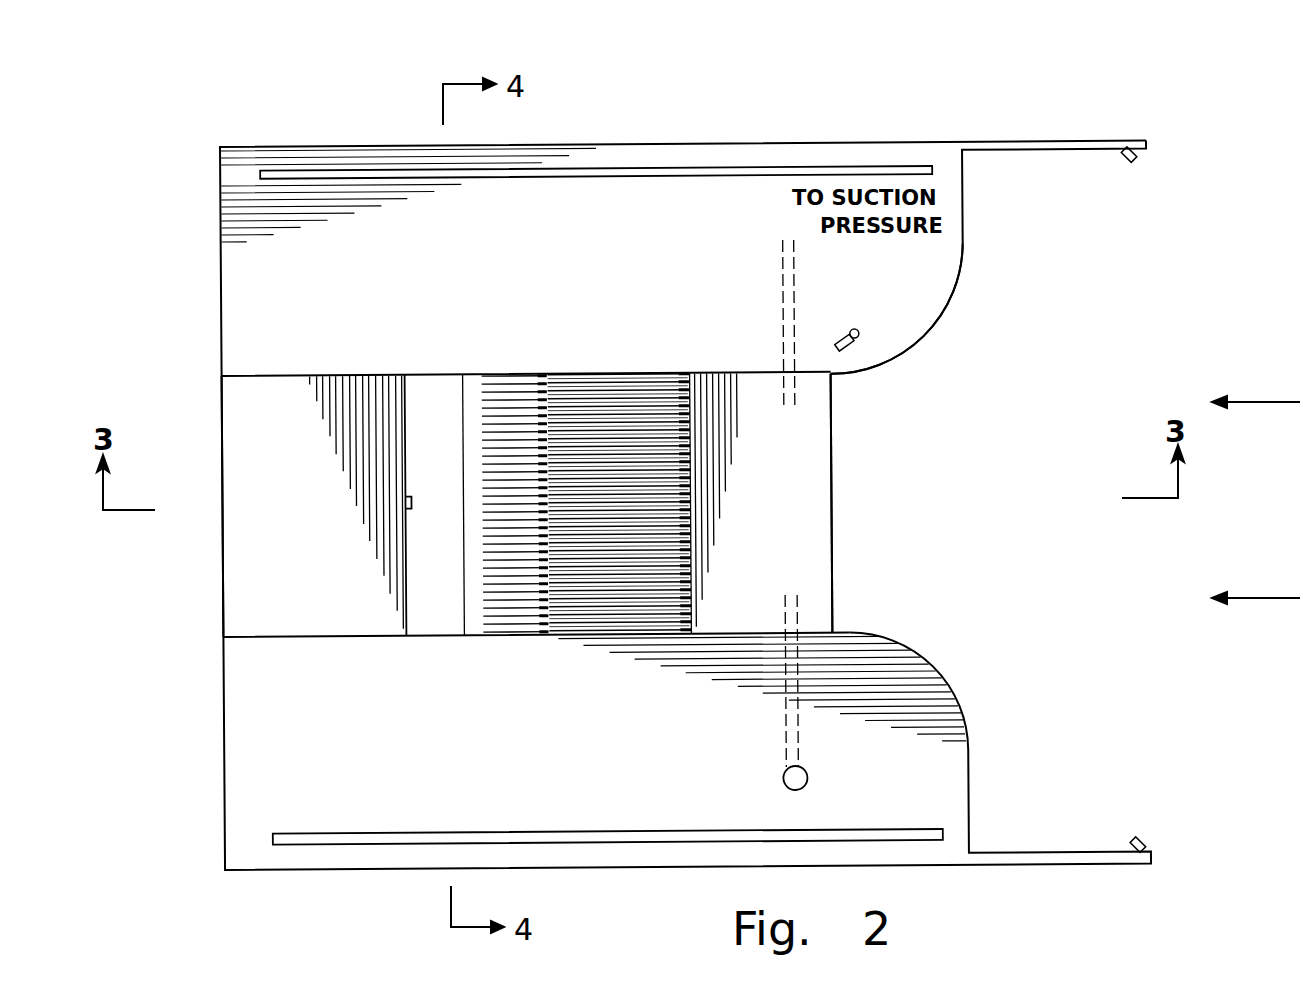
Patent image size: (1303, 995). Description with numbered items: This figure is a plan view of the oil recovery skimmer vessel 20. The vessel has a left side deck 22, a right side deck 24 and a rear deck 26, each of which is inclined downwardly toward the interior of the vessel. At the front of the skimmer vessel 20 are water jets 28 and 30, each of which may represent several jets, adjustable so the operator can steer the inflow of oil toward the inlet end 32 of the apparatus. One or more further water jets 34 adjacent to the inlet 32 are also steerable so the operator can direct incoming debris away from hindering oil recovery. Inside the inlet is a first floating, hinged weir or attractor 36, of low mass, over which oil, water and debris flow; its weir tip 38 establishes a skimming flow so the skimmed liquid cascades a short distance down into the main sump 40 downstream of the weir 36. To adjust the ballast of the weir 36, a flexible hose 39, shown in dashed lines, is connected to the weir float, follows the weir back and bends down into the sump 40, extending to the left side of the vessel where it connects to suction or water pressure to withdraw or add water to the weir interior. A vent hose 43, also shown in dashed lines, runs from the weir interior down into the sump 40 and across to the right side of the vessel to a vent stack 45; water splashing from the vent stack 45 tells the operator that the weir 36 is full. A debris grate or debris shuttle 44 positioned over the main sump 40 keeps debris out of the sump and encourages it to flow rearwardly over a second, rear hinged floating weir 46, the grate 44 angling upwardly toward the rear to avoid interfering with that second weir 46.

The oil recovery skimmer vessel 20 is at (645, 142).
The left side deck 22 is at (643, 280).
The right side deck 24 is at (608, 772).
The rear deck 26 is at (236, 547).
The water jets 28 is at (1139, 162).
The water jets 30 is at (1143, 840).
The inlet end 32 is at (928, 381).
The further water jets 34 is at (840, 339).
The floating hinged weir 36 is at (831, 496).
The weir tip 38 is at (692, 372).
The flexible hose 39 is at (793, 230).
The main sump 40 is at (597, 382).
The vent hose 43 is at (786, 715).
The debris grate 44 is at (575, 624).
The vent stack 45 is at (807, 780).
The second hinged floating weir 46 is at (474, 380).